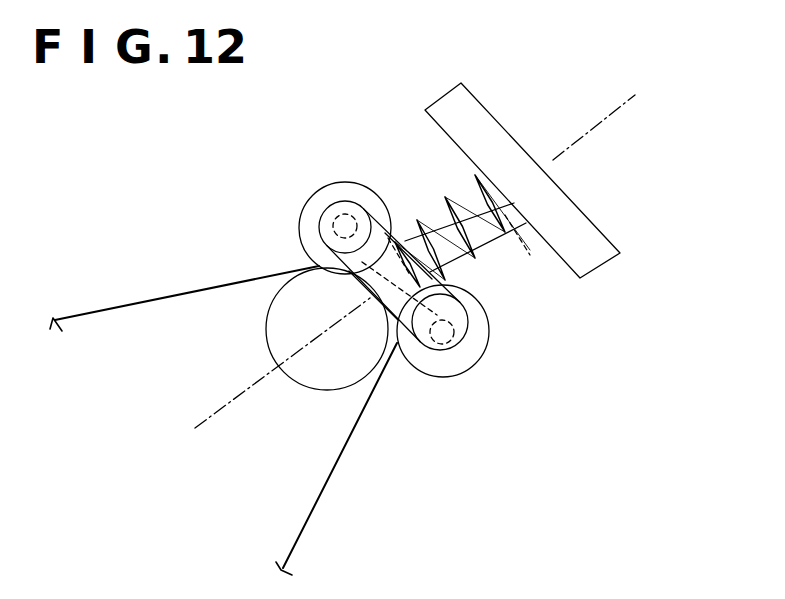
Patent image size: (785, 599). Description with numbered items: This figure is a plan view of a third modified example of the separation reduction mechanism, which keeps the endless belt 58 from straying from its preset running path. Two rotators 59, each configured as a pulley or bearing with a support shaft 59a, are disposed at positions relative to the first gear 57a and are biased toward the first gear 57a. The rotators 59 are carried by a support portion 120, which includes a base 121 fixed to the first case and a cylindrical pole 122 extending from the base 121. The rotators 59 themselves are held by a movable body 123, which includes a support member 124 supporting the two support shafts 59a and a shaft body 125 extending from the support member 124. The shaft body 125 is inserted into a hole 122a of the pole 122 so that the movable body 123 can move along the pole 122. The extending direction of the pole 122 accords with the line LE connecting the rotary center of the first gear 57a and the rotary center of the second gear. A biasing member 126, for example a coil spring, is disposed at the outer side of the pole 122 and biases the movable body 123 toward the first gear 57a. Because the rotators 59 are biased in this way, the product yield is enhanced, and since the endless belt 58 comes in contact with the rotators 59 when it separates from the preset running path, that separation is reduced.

The line connecting the rotary centers LE is at (612, 112).
The support portion 120 is at (558, 213).
The base 121 is at (603, 265).
The pole 122 is at (490, 240).
The hole 122a is at (437, 210).
The movable body 123 is at (471, 331).
The support member 124 is at (470, 360).
The shaft body 125 is at (468, 265).
The biasing member 126 is at (417, 216).
The rotator 59 is at (323, 188).
The support shaft 59a is at (317, 222).
The first gear 57a is at (277, 338).
The endless belt 58 is at (100, 313).